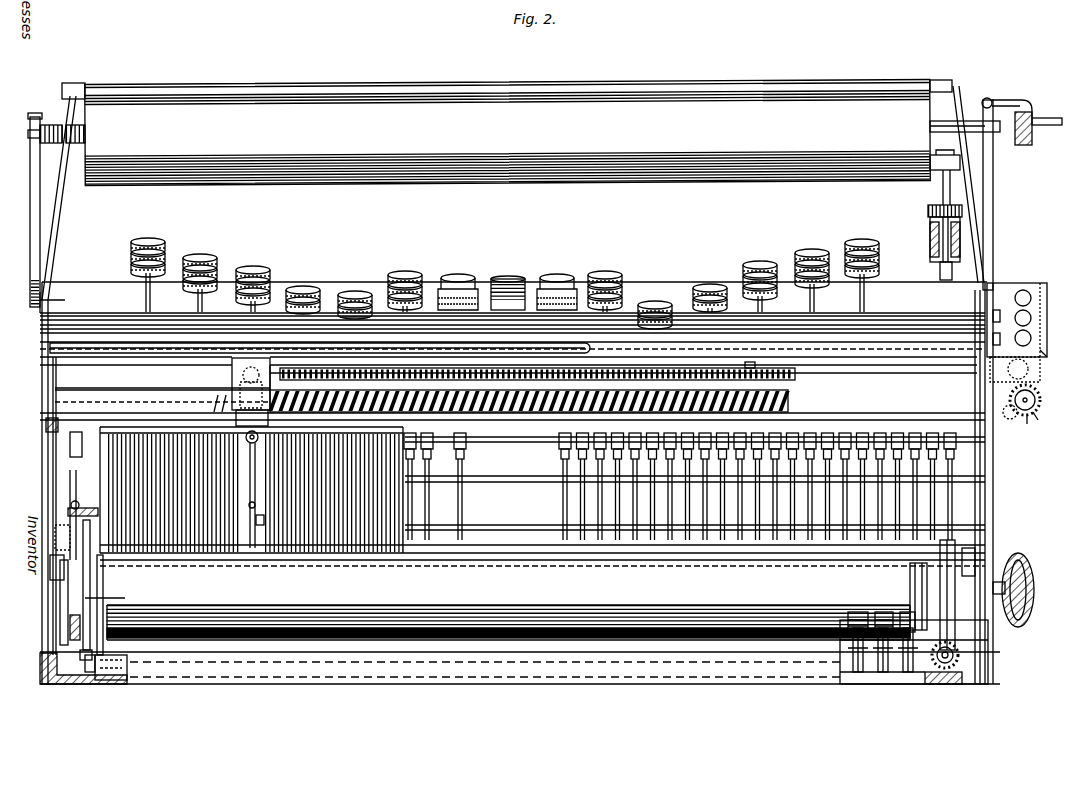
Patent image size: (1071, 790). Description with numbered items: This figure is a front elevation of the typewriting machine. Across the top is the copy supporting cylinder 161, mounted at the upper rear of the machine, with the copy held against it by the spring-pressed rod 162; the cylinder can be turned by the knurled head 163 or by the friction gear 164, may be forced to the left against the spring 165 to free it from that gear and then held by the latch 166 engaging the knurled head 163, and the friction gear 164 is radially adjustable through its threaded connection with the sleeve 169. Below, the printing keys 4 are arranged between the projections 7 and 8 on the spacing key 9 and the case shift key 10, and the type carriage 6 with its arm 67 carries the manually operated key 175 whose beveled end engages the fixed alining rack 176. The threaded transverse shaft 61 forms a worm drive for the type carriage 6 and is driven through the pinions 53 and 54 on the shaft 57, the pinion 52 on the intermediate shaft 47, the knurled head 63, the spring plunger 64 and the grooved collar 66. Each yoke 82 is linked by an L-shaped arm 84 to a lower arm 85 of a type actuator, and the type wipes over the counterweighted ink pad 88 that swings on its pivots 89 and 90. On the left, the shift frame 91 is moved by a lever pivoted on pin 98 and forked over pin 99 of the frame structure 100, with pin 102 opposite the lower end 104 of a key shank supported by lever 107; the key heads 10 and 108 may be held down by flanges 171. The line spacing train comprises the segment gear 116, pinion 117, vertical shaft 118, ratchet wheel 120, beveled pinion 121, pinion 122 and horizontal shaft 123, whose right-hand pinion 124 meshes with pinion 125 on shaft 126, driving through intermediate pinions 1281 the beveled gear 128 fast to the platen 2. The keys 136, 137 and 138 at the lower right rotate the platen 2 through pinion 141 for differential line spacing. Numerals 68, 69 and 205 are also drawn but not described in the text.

The platen 2 is at (508, 607).
The keys 4 is at (133, 274).
The type carriage 6 is at (105, 427).
The projection 7 is at (470, 290).
The projection 8 is at (508, 278).
The spacing key 9 is at (358, 305).
The case shift key 10 is at (165, 325).
The intermediate shaft 47 is at (1043, 357).
The pinion 52 is at (1041, 364).
The pinion 53 is at (1025, 429).
The pinion 54 is at (1040, 402).
The shaft 57 is at (1044, 422).
The transverse shaft 61 is at (880, 396).
The knurled head 63 is at (1030, 375).
The spring plunger 64 is at (228, 382).
The collar 66 is at (1009, 419).
The arm 67 is at (270, 421).
The shaft 68 is at (585, 350).
The bracket with apertures 69 is at (1016, 340).
The yoke 82 is at (524, 482).
The L-shaped arm 84 is at (462, 465).
The lower arm 85 is at (458, 447).
The ink pad 88 is at (248, 522).
The pivot 89 is at (262, 530).
The pivot 90 is at (240, 520).
The frame 91 is at (911, 571).
The pin 98 is at (32, 566).
The pin 99 is at (72, 626).
The frame structure 100 is at (990, 636).
The pin 102 is at (48, 582).
The lower end 104 is at (60, 540).
The lever 107 is at (45, 425).
The key head 108 is at (100, 338).
The segment gear 116 is at (72, 516).
The pinion 117 is at (68, 522).
The vertical shaft 118 is at (90, 598).
The ratchet wheel 120 is at (135, 556).
The beveled pinion 121 is at (80, 662).
The pinion 122 is at (93, 684).
The horizontal shaft 123 is at (292, 673).
The pinion 124 is at (934, 678).
The pinion 125 is at (966, 681).
The shaft 126 is at (960, 656).
The beveled gear 128 is at (976, 560).
The intermediate pinions 1281 is at (958, 625).
The key 136 is at (858, 624).
The key 137 is at (883, 624).
The key 138 is at (906, 622).
The pinion 141 is at (856, 674).
The copy supporting cylinder 161 is at (497, 176).
The spring-pressed rod 162 is at (72, 95).
The knurled head 163 is at (1025, 146).
The friction gear 164 is at (936, 171).
The spring 165 is at (46, 124).
The latch 166 is at (1010, 101).
The sleeve 169 is at (930, 213).
The flanges 171 is at (68, 330).
The key 175 is at (292, 370).
The alining rack 176 is at (396, 371).
The plate 205 is at (509, 526).